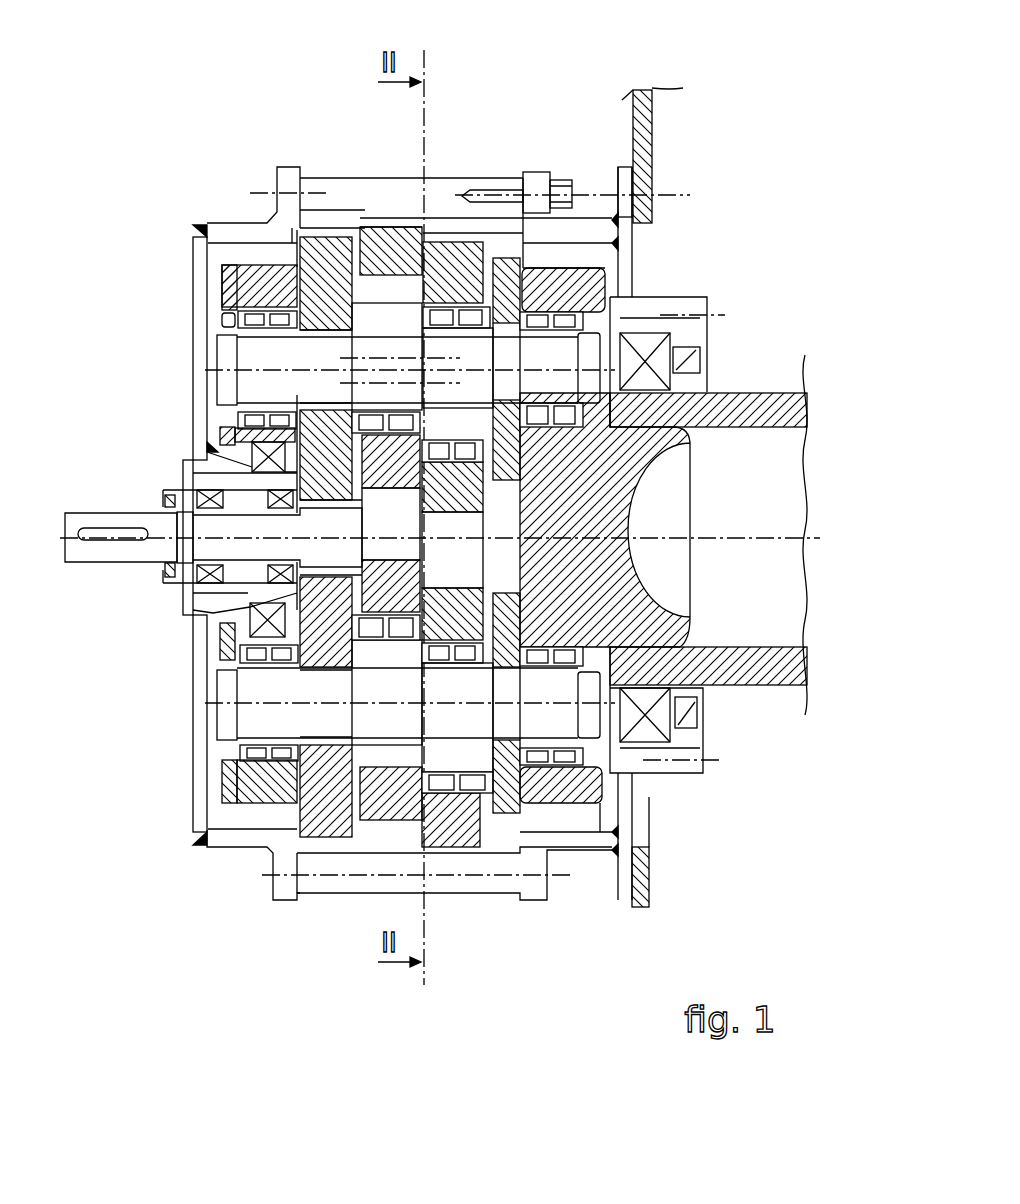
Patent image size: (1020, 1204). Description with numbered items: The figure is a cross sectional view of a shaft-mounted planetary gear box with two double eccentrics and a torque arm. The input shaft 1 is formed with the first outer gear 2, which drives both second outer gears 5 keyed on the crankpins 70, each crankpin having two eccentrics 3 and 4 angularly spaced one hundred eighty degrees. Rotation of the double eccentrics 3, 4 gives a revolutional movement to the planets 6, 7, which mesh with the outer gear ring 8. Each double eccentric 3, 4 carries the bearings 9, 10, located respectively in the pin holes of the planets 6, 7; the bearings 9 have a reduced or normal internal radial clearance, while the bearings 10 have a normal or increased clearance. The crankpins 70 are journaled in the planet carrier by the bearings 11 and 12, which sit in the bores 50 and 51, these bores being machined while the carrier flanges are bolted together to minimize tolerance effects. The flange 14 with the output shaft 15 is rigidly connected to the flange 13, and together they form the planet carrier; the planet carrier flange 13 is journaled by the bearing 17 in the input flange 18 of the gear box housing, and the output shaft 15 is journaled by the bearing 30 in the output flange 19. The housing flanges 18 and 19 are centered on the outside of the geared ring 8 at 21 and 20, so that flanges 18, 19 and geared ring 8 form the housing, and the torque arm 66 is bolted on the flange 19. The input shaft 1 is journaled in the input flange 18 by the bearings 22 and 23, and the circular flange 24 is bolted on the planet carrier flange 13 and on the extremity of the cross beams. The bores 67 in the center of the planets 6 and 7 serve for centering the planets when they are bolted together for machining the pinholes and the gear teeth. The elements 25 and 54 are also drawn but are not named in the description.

The input shaft 1 is at (117, 548).
The first outer gear 2 is at (180, 540).
The eccentric 3 is at (340, 250).
The eccentric 4 is at (482, 348).
The second outer gear 5 is at (265, 275).
The planet 6 is at (373, 292).
The planet 7 is at (438, 273).
The outer gear ring 8 is at (398, 250).
The bearing 9 is at (409, 200).
The bearing 10 is at (447, 320).
The bearing 11 is at (268, 330).
The bearing 12 is at (675, 427).
The flange 13 is at (203, 173).
The flange 14 is at (557, 330).
The output shaft 15 is at (805, 393).
The bearing 17 is at (260, 457).
The input flange 18 is at (200, 333).
The output flange 19 is at (627, 267).
The centering location 20 is at (522, 178).
The centering location 21 is at (310, 257).
The bearing 22 is at (213, 493).
The bearing 23 is at (250, 590).
The circular flange 24 is at (227, 768).
The bearing housing 25 is at (230, 790).
The bearing 30 is at (650, 343).
The bore 50 is at (255, 305).
The bore 51 is at (787, 417).
The bearing sleeve 54 is at (538, 353).
The torque arm 66 is at (645, 128).
The bore 67 is at (393, 490).
The crankpin 70 is at (270, 383).